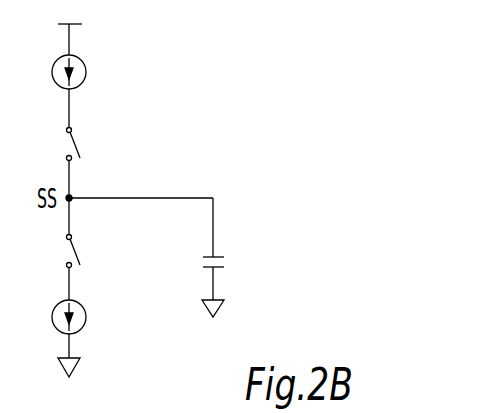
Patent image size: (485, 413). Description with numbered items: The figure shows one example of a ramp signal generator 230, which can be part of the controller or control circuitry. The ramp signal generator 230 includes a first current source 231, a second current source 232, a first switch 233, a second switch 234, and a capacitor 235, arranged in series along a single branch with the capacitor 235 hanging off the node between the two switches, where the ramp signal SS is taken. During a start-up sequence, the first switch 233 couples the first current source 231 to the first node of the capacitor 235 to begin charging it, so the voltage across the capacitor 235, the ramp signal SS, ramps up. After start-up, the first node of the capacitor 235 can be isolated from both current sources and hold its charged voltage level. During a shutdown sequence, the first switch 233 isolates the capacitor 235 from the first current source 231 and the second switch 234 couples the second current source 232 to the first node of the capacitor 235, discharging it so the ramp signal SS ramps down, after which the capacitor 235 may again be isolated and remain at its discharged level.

The ramp signal generator 230 is at (312, 45).
The first current source 231 is at (87, 72).
The second current source 232 is at (87, 317).
The first switch 233 is at (75, 145).
The second switch 234 is at (75, 252).
The capacitor 235 is at (226, 262).